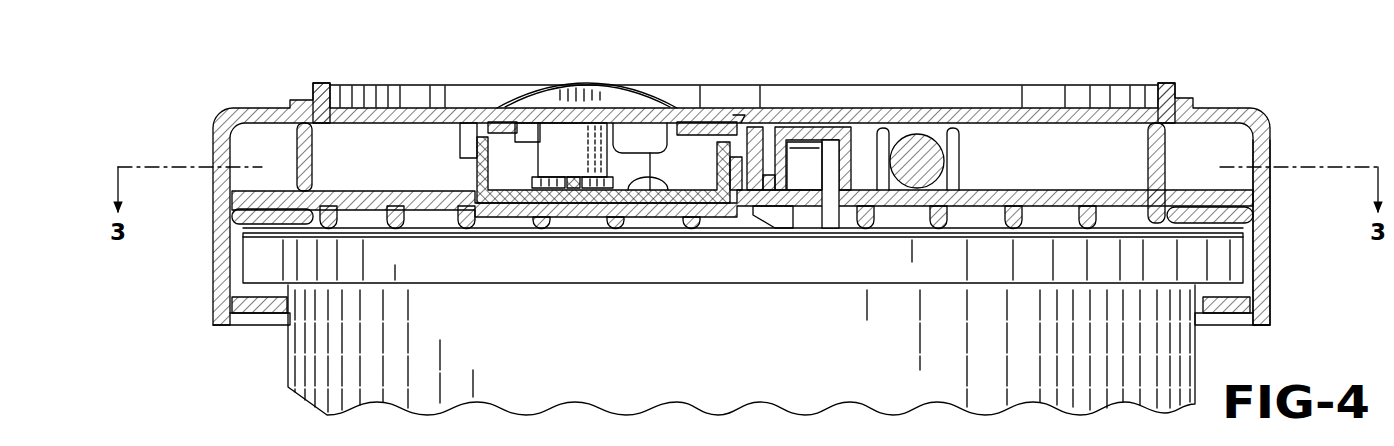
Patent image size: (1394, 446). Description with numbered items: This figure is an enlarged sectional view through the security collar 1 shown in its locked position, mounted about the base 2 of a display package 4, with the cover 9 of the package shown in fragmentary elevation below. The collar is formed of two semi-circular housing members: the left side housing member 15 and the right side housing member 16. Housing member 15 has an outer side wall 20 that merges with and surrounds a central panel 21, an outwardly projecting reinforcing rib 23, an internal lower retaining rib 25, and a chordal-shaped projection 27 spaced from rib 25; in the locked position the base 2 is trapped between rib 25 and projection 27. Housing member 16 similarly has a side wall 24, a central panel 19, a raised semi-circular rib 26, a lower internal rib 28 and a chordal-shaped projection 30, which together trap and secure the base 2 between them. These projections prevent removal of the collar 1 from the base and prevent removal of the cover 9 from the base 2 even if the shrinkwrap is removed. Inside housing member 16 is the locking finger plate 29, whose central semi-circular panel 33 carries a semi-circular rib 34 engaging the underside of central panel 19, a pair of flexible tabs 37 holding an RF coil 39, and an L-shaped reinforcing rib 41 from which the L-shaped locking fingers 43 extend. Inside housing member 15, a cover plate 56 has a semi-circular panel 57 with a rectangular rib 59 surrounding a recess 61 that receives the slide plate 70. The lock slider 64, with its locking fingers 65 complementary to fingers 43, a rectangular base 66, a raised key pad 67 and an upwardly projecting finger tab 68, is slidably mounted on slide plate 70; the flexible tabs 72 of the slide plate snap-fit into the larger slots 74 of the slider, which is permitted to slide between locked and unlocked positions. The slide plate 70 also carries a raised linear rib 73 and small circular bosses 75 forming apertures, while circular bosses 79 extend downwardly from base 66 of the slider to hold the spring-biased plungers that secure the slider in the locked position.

The security collar 1 is at (1258, 90).
The base 2 is at (734, 283).
The display package 4 is at (318, 402).
The cover 9 is at (300, 372).
The left side housing member 15 is at (236, 106).
The right side housing member 16 is at (1274, 116).
The central panel 19 is at (994, 110).
The outer side wall 20 is at (217, 242).
The central panel 21 is at (458, 112).
The reinforcing rib 23 is at (315, 84).
The side wall 24 is at (1267, 236).
The lower retaining rib 25 is at (256, 313).
The raised semi-circular rib 26 is at (1166, 84).
The chordal-shaped projection 27 is at (277, 220).
The lower internal semi-circular rib 28 is at (1225, 312).
The locking finger plate 29 is at (1022, 188).
The chordal-shaped projection 30 is at (1200, 220).
The central semi-circular panel 33 is at (1084, 192).
The semi-circular rib 34 is at (1150, 158).
The flexible tabs 37 is at (887, 134).
The RF coil 39 is at (935, 163).
The L-shaped reinforcing rib 41 is at (845, 150).
The L-shaped locking fingers 43 is at (760, 127).
The cover plate 56 is at (404, 190).
The semi-circular panel 57 is at (347, 192).
The rectangular shaped rib 59 is at (298, 150).
The rectangular shaped recess 61 is at (648, 200).
The lock slider 64 is at (787, 203).
The L-shaped locking fingers 65 is at (806, 152).
The rectangular base 66 is at (700, 125).
The raised key pad 67 is at (647, 112).
The finger tab 68 is at (604, 94).
The slide plate 70 is at (514, 203).
The flexible tabs 72 is at (480, 168).
The raised linear rib 73 is at (571, 177).
The slots 74 is at (462, 145).
The circular bosses 75 is at (531, 183).
The circular bosses 79 is at (578, 137).